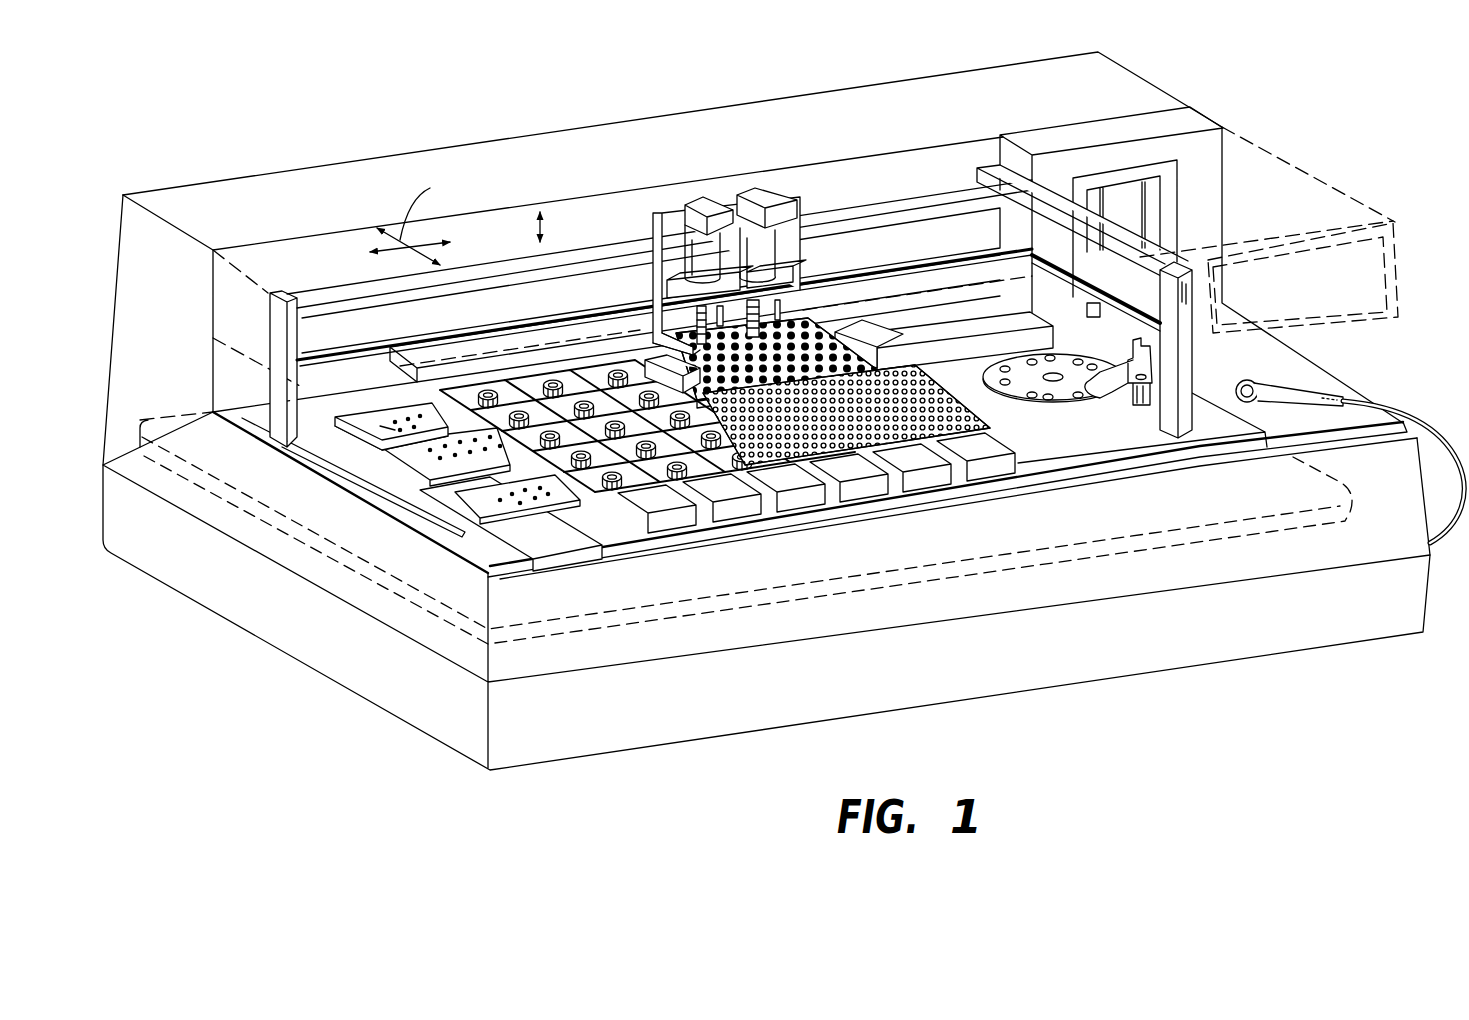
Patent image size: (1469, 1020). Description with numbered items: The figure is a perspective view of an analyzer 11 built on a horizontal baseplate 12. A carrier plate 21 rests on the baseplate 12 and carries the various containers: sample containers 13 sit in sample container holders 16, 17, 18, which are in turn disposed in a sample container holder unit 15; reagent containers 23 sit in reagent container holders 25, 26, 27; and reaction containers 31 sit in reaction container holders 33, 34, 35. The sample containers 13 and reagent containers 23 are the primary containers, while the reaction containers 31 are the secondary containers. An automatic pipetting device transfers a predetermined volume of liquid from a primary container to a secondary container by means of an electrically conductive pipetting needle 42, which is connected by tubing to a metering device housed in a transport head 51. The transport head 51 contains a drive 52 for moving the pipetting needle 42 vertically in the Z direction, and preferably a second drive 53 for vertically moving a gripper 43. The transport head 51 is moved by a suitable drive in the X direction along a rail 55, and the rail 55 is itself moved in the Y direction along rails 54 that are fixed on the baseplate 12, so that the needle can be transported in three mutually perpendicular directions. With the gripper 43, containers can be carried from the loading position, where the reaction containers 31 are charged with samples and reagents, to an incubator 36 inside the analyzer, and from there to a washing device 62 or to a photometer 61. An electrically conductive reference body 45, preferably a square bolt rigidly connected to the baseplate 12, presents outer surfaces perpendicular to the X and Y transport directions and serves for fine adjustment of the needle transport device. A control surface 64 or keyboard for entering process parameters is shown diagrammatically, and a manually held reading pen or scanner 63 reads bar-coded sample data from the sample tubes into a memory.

The analyzer 11 is at (560, 126).
The horizontal baseplate 12 is at (358, 570).
The sample containers 13 is at (395, 428).
The sample container holder unit 15 is at (470, 492).
The sample container holder 16 is at (503, 510).
The sample container holder 17 is at (343, 453).
The sample container holder 18 is at (437, 463).
The carrier plate 21 is at (767, 530).
The reagent containers 23 is at (440, 430).
The reagent container holder 25 is at (663, 527).
The reagent container holder 26 is at (723, 517).
The reagent container holder 27 is at (810, 507).
The reaction containers 31 is at (993, 415).
The reaction container holder 33 is at (867, 500).
The reaction container holder 34 is at (933, 490).
The reaction container holder 35 is at (1003, 480).
The incubator 36 is at (856, 334).
The pipetting needle 42 is at (652, 297).
The gripper 43 is at (787, 310).
The reference body 45 is at (578, 328).
The transport head 51 is at (730, 233).
The drive 52 is at (703, 258).
The drive 53 is at (747, 248).
The rails 54 is at (990, 167).
The rail 55 is at (350, 295).
The photometer 61 is at (915, 329).
The washing device 62 is at (1062, 410).
The reading pen or scanner 63 is at (1293, 392).
The control surface 64 is at (1323, 260).